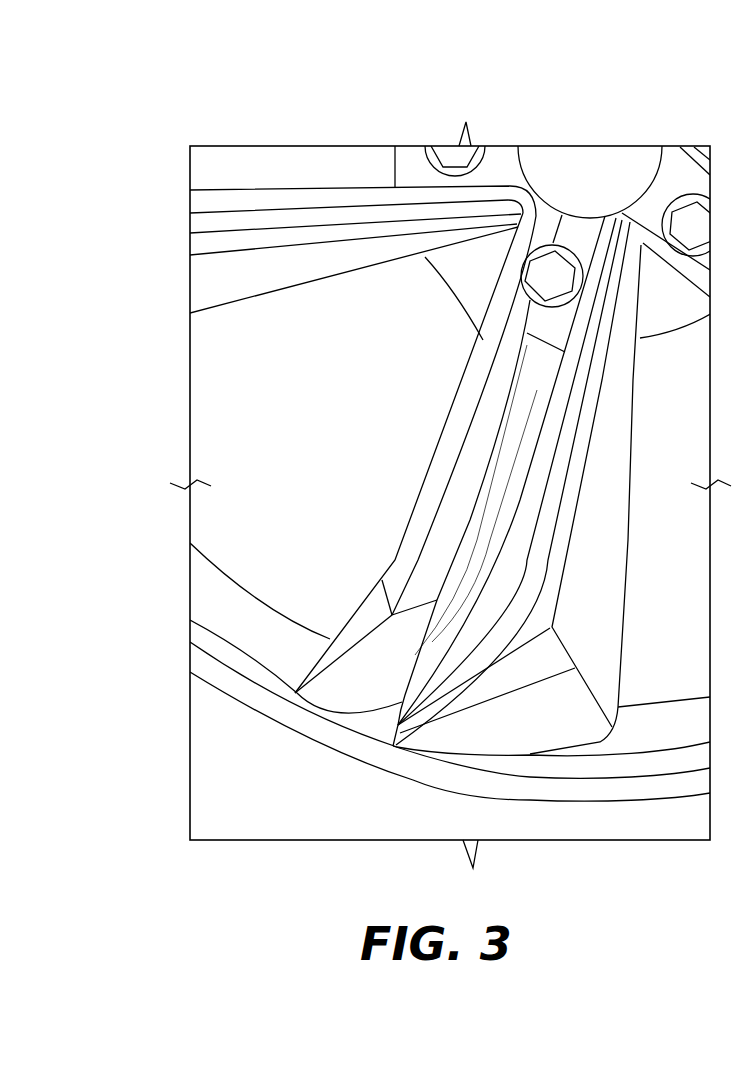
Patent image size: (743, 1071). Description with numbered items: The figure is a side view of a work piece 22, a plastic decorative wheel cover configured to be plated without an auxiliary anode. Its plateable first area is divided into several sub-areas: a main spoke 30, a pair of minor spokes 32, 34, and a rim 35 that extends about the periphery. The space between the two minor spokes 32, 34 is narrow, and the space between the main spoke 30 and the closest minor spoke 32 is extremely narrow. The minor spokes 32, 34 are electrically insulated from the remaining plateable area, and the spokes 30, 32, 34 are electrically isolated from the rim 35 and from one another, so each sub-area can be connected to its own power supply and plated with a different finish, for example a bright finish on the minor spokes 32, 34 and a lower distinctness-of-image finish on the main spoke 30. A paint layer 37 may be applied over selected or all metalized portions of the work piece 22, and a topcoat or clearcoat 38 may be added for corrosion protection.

The work piece 22 is at (366, 133).
The main spoke 30 is at (600, 582).
The minor spoke 32 is at (402, 701).
The minor spoke 34 is at (324, 463).
The paint layer 37 is at (318, 665).
The rim 35 is at (651, 767).
The topcoat or clearcoat 38 is at (572, 772).